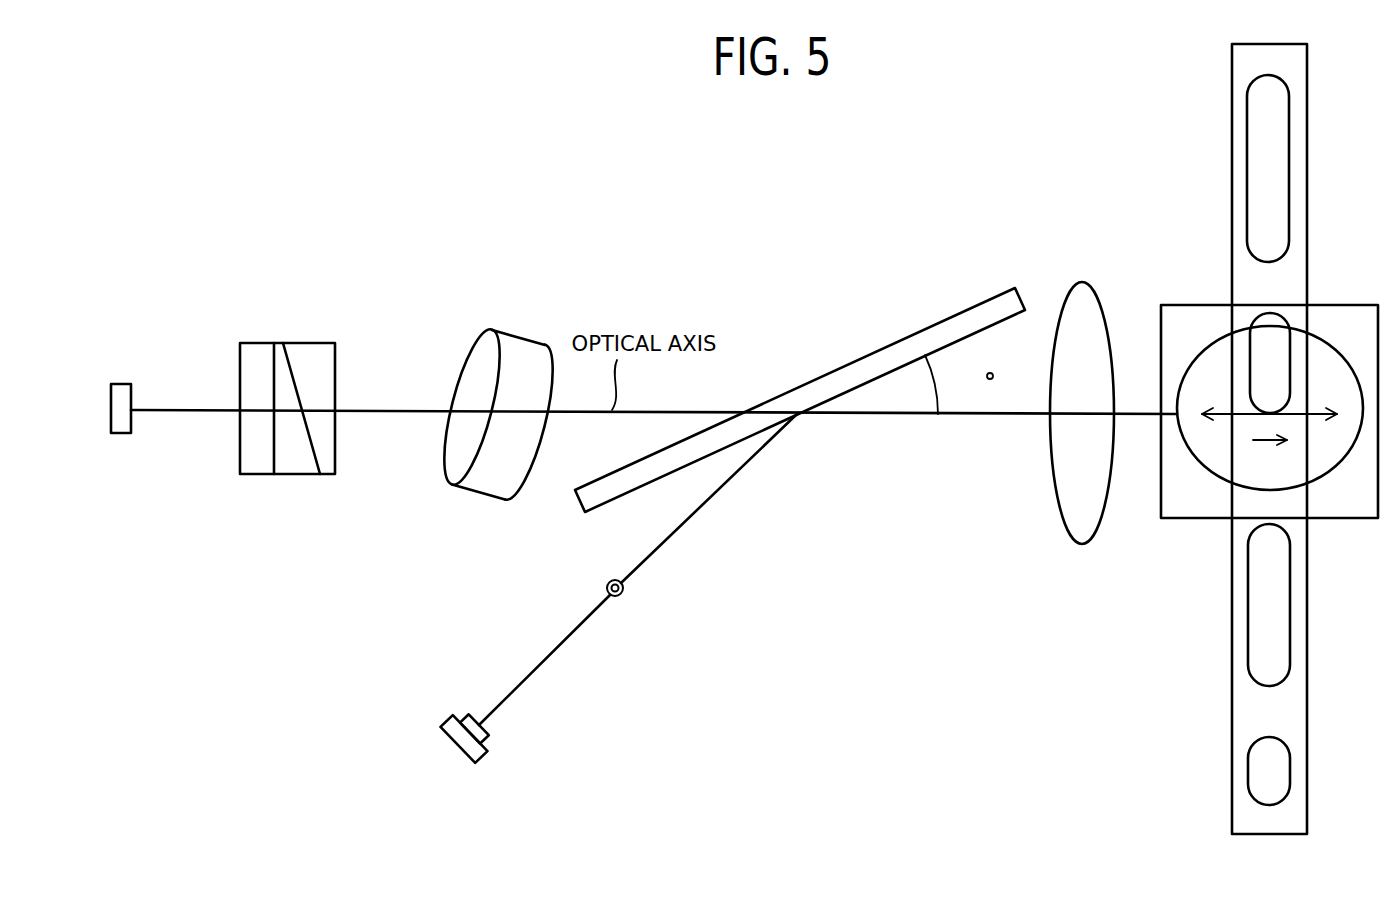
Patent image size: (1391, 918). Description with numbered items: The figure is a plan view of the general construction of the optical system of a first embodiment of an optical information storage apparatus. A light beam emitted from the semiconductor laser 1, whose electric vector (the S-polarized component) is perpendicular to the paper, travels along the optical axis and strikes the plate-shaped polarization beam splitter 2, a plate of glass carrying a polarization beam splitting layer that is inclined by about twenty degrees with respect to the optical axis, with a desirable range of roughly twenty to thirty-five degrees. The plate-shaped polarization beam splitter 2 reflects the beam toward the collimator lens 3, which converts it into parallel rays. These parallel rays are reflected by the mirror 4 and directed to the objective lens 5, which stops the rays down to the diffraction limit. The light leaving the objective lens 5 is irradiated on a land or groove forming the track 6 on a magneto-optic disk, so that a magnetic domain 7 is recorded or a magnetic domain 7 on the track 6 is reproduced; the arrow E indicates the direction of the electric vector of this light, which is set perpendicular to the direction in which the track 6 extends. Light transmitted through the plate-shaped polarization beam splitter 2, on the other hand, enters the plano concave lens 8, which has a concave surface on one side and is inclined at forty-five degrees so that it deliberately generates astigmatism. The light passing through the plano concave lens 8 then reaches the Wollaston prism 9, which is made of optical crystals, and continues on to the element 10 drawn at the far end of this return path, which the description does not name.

The semiconductor laser 1 is at (443, 722).
The plate-shaped polarization beam splitter 2 is at (798, 398).
The collimator lens 3 is at (1058, 468).
The mirror 4 is at (1193, 497).
The objective lens 5 is at (1327, 348).
The track 6 is at (1233, 758).
The magnetic domain 7 is at (1248, 637).
The plano concave lens 8 is at (525, 345).
The Wollaston prism 9 is at (290, 474).
The photodetector 10 is at (125, 433).